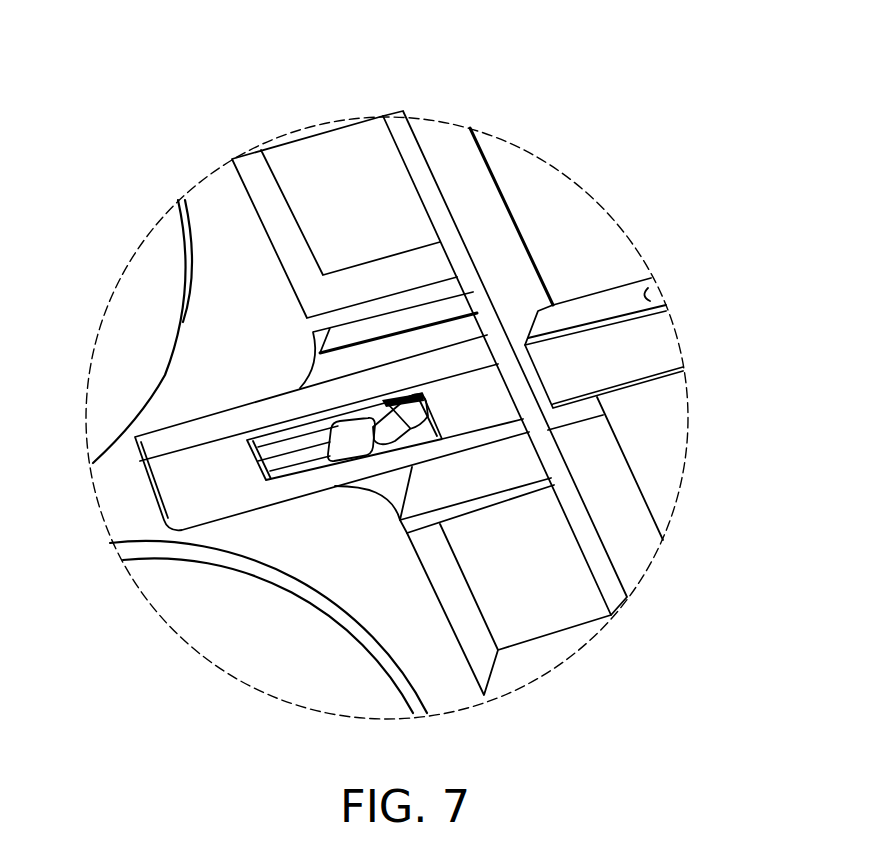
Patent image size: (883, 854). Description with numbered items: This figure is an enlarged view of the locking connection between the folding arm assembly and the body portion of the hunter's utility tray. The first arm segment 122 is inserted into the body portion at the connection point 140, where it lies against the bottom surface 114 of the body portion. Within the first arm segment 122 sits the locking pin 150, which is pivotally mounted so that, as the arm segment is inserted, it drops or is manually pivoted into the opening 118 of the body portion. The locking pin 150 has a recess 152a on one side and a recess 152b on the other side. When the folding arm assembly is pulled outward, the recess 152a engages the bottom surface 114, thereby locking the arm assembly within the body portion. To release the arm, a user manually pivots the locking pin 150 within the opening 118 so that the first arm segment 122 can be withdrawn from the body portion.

The bottom surface 114 is at (220, 227).
The opening 118 is at (283, 472).
The first arm segment 122 is at (633, 350).
The connection point 140 is at (553, 305).
The locking pin 150 is at (403, 418).
The recess 152a is at (385, 403).
The recess 152b is at (355, 442).